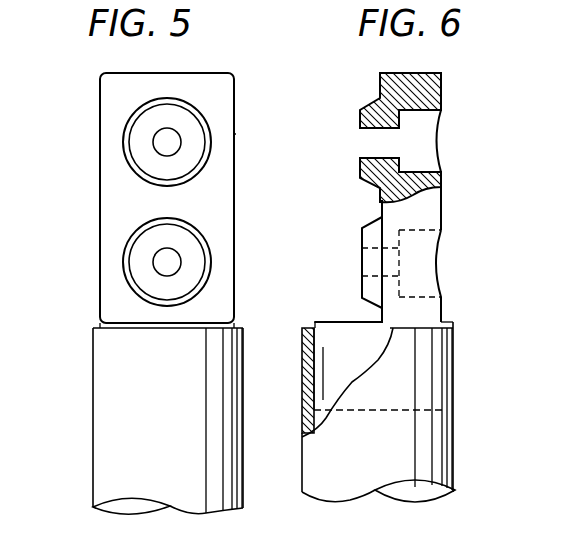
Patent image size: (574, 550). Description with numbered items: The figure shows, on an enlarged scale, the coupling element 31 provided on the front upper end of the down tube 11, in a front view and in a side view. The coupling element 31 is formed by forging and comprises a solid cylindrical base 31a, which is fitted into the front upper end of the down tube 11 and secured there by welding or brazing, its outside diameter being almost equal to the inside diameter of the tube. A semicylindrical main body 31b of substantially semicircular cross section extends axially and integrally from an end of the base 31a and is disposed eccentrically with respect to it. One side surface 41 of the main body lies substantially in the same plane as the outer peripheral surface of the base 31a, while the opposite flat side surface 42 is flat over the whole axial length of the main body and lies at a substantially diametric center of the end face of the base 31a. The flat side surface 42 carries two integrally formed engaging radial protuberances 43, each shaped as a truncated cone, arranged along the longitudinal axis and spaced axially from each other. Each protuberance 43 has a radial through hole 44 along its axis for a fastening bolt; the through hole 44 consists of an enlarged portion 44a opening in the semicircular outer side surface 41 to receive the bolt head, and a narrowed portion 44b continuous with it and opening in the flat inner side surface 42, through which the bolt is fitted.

In FIG. 5, the down tube 11 is at (232, 420).
In FIG. 6, the down tube 11 is at (440, 445).
In FIG. 5, the coupling element 31 is at (236, 176).
In FIG. 6, the coupling element 31 is at (443, 200).
In FIG. 6, the solid cylindrical base 31a is at (323, 368).
In FIG. 5, the main body 31b is at (236, 134).
In FIG. 6, the main body 31b is at (443, 92).
In FIG. 6, the side surface 41 is at (443, 225).
In FIG. 5, the flat side surface 42 is at (100, 222).
In FIG. 6, the flat side surface 42 is at (365, 288).
In FIG. 5, the engaging radial protuberance 43 is at (185, 130).
In FIG. 6, the engaging radial protuberance 43 is at (366, 108).
In FIG. 6, the radial through hole 44 is at (422, 128).
In FIG. 6, the enlarged portion 44a is at (430, 160).
In FIG. 5, the narrowed portion 44b is at (158, 143).
In FIG. 6, the narrowed portion 44b is at (378, 154).